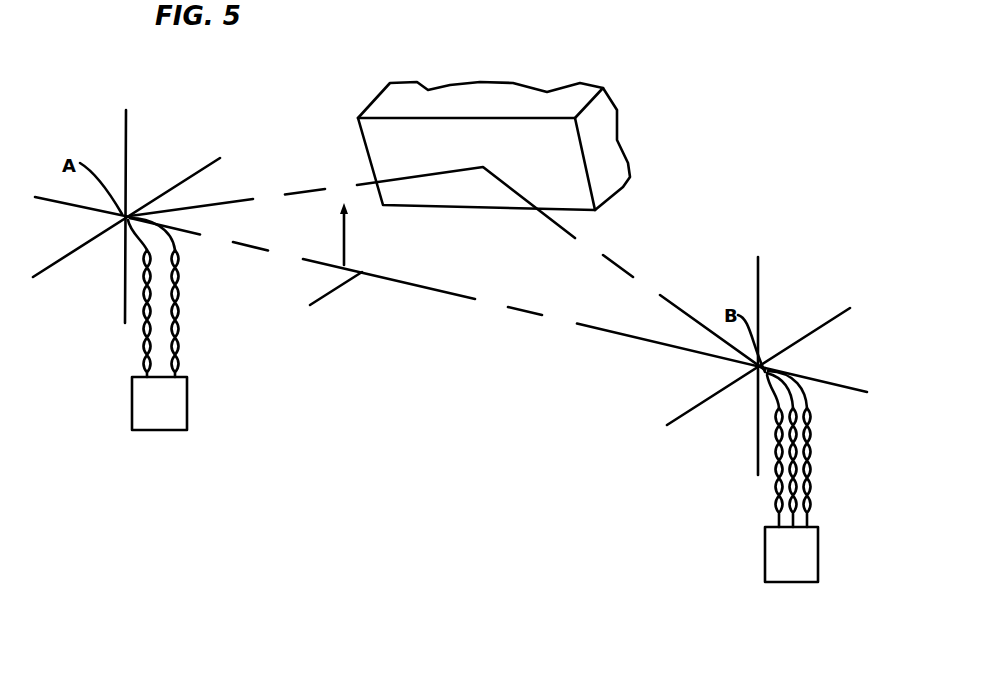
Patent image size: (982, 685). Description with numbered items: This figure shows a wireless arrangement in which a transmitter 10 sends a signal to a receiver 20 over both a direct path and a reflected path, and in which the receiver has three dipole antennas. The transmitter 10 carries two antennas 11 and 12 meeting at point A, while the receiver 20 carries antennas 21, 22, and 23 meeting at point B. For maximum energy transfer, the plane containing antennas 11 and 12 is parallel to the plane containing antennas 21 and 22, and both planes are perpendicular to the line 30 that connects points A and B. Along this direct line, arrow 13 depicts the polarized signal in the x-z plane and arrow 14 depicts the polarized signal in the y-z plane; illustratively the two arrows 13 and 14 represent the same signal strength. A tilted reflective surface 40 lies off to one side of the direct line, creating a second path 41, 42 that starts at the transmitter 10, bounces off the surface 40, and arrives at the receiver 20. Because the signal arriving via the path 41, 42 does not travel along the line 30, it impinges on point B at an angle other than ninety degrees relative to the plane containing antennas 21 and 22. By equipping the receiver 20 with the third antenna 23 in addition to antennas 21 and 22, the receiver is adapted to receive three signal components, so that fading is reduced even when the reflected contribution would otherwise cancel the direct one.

The transmitter 10 is at (187, 398).
The antenna 11 is at (126, 130).
The antenna 12 is at (213, 163).
The arrow 13 is at (345, 238).
The arrow 14 is at (341, 289).
The receiver 20 is at (818, 551).
The antenna 21 is at (758, 275).
The antenna 22 is at (843, 311).
The antenna 23 is at (847, 386).
The line 30 is at (481, 299).
The surface 40 is at (480, 83).
The path 41 is at (325, 189).
The path 42 is at (620, 266).